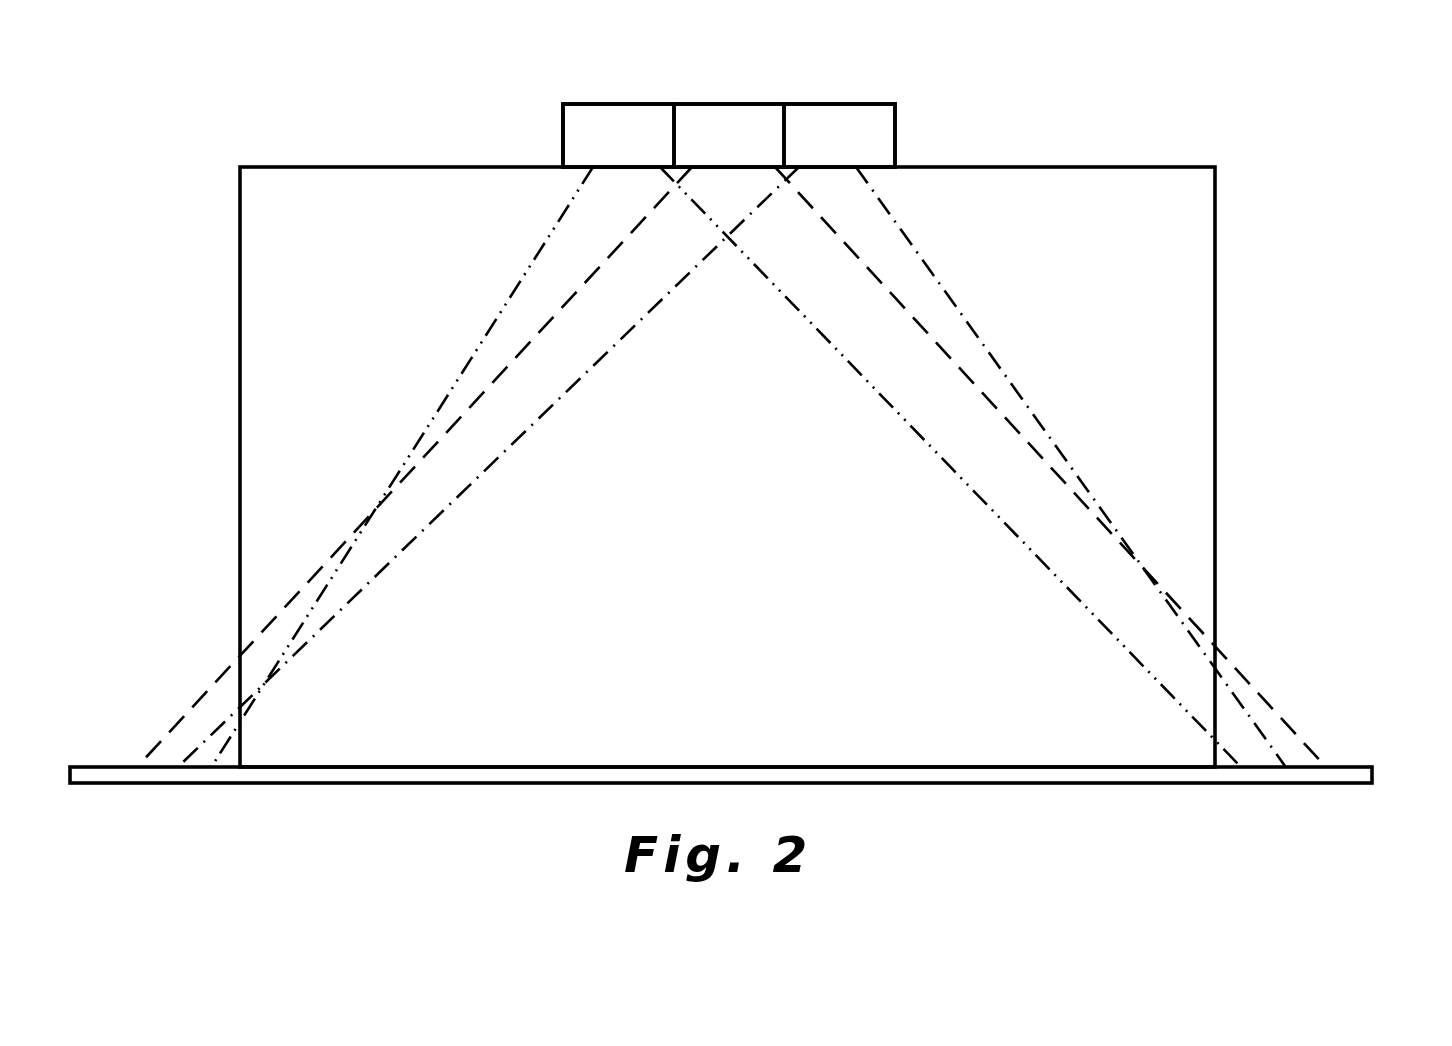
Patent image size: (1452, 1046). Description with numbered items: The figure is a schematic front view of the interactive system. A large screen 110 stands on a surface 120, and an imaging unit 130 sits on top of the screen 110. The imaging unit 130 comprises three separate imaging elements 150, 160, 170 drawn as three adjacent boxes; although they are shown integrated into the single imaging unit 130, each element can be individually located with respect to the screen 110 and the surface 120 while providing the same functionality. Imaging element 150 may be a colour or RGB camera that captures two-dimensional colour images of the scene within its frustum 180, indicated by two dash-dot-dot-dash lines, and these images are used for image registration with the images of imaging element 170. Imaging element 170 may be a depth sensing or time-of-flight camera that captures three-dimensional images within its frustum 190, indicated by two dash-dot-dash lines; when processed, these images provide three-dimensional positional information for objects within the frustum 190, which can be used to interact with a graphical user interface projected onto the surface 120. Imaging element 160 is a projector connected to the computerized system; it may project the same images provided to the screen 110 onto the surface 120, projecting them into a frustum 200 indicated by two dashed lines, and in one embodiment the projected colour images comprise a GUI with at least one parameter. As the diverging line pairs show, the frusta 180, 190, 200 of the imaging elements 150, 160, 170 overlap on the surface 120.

The screen 110 is at (748, 547).
The surface 120 is at (1353, 775).
The imaging unit 130 is at (543, 108).
The imaging element 150 is at (595, 130).
The imaging element 160 is at (701, 130).
The imaging element 170 is at (813, 130).
The frustum 180 is at (931, 441).
The frustum 190 is at (965, 308).
The frustum 200 is at (866, 268).